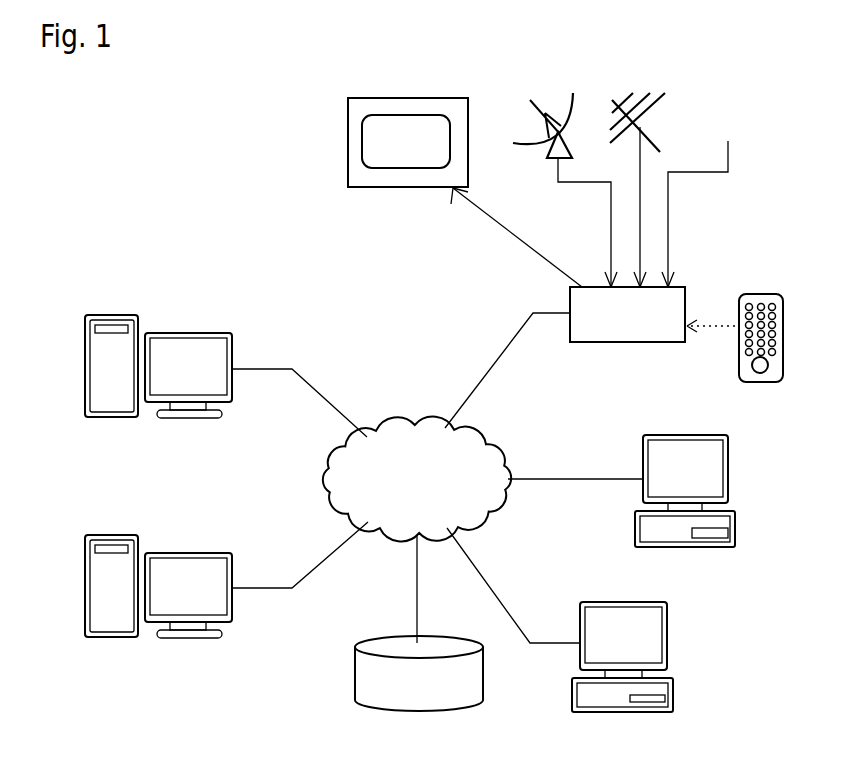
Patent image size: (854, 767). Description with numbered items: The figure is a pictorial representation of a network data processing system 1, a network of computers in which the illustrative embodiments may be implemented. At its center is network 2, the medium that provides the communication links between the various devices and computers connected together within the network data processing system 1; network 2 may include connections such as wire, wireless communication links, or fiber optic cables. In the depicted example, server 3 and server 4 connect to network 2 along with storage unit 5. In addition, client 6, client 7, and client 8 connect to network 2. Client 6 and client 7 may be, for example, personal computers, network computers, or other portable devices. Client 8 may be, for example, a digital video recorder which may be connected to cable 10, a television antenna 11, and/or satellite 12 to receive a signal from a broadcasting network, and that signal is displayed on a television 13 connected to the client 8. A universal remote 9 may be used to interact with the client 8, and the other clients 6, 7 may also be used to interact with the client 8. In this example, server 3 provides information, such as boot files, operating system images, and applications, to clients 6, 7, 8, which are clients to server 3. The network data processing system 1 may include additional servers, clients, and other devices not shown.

The network data processing system 1 is at (300, 287).
The network 2 is at (410, 423).
The server 3 is at (85, 588).
The server 4 is at (85, 366).
The storage unit 5 is at (355, 675).
The client 6 is at (673, 695).
The client 7 is at (735, 530).
The client 8 is at (626, 335).
The universal remote 9 is at (740, 373).
The cable 10 is at (727, 121).
The television antenna 11 is at (644, 93).
The satellite 12 is at (572, 96).
The television 13 is at (385, 103).